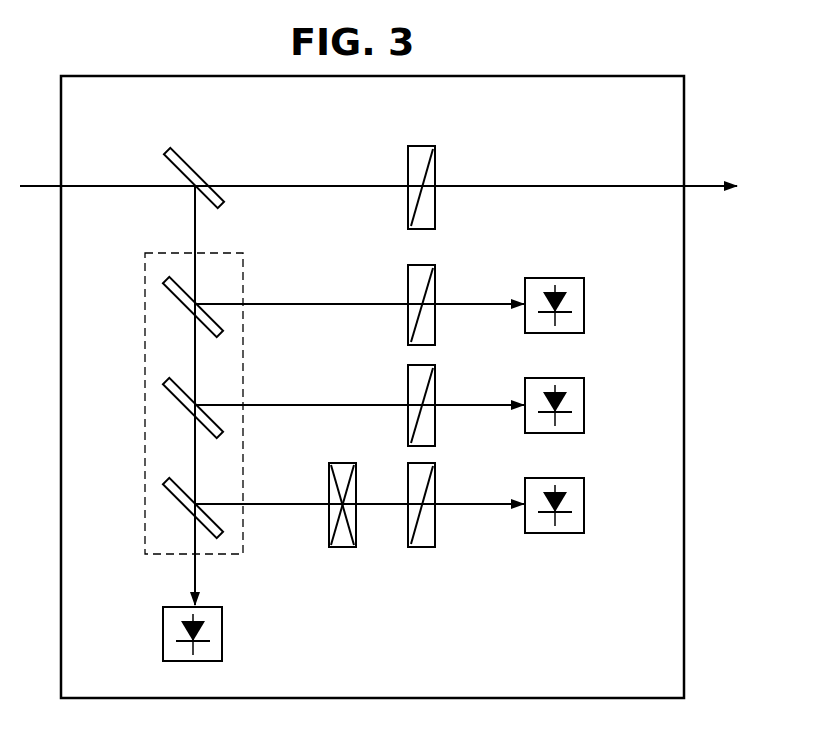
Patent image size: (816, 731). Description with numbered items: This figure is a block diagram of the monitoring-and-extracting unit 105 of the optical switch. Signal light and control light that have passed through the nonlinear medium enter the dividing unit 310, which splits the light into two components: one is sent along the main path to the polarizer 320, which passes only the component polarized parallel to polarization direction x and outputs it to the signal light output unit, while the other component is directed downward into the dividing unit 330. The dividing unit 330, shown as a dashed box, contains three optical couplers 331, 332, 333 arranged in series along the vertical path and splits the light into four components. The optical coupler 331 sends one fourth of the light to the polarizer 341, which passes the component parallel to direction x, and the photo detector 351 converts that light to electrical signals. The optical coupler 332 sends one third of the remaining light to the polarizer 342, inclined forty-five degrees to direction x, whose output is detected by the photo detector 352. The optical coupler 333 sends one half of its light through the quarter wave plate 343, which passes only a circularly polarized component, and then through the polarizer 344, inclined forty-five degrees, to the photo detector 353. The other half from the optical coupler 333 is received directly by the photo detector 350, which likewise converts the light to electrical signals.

The monitoring-and-extracting unit 105 is at (652, 76).
The dividing unit 310 is at (192, 150).
The polarizer 320 is at (437, 168).
The dividing unit 330 is at (232, 253).
The optical coupler 331 is at (190, 304).
The optical coupler 332 is at (190, 405).
The optical coupler 333 is at (190, 504).
The polarizer 341 is at (437, 273).
The polarizer 342 is at (437, 373).
The quarter wave plate 343 is at (329, 470).
The polarizer 344 is at (437, 472).
The photo detector 350 is at (222, 633).
The photo detector 351 is at (584, 302).
The photo detector 352 is at (584, 403).
The photo detector 353 is at (584, 504).